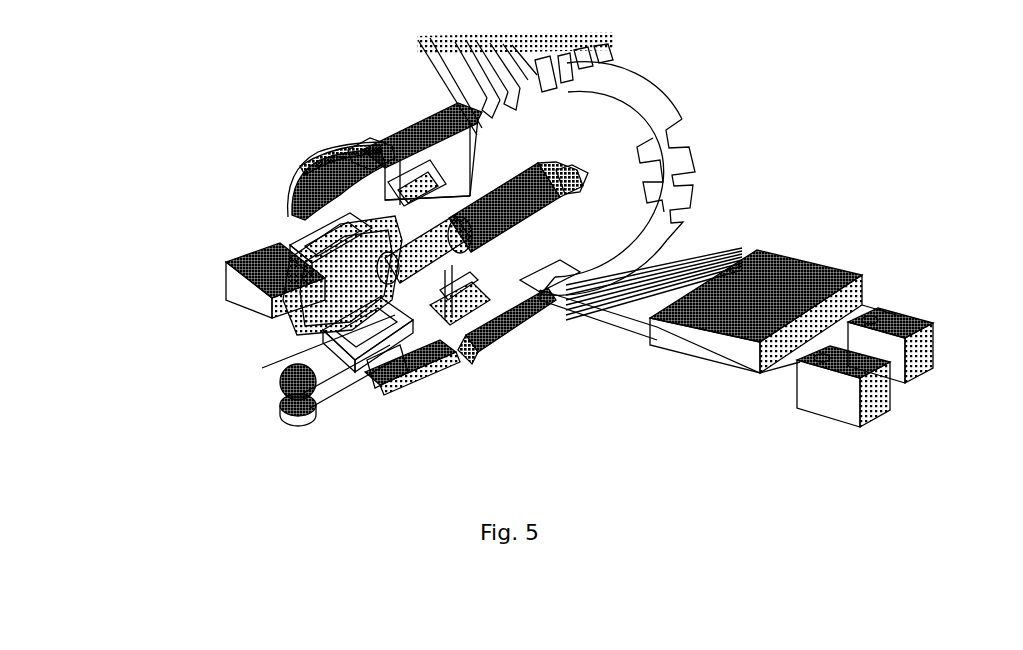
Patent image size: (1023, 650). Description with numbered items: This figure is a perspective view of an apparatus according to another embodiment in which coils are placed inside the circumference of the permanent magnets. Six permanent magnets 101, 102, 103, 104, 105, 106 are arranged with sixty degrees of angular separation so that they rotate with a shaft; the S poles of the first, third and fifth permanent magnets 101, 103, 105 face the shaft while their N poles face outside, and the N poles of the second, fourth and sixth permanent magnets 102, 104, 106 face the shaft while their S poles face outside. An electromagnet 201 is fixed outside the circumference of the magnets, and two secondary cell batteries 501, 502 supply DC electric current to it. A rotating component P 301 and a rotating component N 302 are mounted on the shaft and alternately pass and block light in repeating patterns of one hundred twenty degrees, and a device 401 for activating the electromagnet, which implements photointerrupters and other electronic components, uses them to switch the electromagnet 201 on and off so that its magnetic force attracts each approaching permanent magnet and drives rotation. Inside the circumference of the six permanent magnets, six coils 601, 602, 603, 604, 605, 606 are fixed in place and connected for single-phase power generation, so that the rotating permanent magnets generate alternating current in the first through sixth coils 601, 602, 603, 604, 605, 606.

The permanent magnet-1 101 is at (277, 280).
The permanent magnet-2 102 is at (274, 180).
The permanent magnet-3 103 is at (304, 117).
The permanent magnet-4 104 is at (504, 276).
The permanent magnet-5 105 is at (520, 356).
The permanent magnet-6 106 is at (330, 401).
The electromagnet 201 is at (226, 280).
The rotating component P 301 is at (589, 160).
The rotating component N 302 is at (711, 150).
The device for activating electromagnet 401 is at (721, 295).
The secondary cell battery 501 is at (802, 400).
The secondary cell battery 502 is at (927, 334).
The coil-1 601 is at (290, 343).
The coil-2 602 is at (259, 232).
The coil-3 603 is at (324, 151).
The coil-4 604 is at (384, 119).
The coil-5 605 is at (511, 342).
The coil-6 606 is at (445, 414).